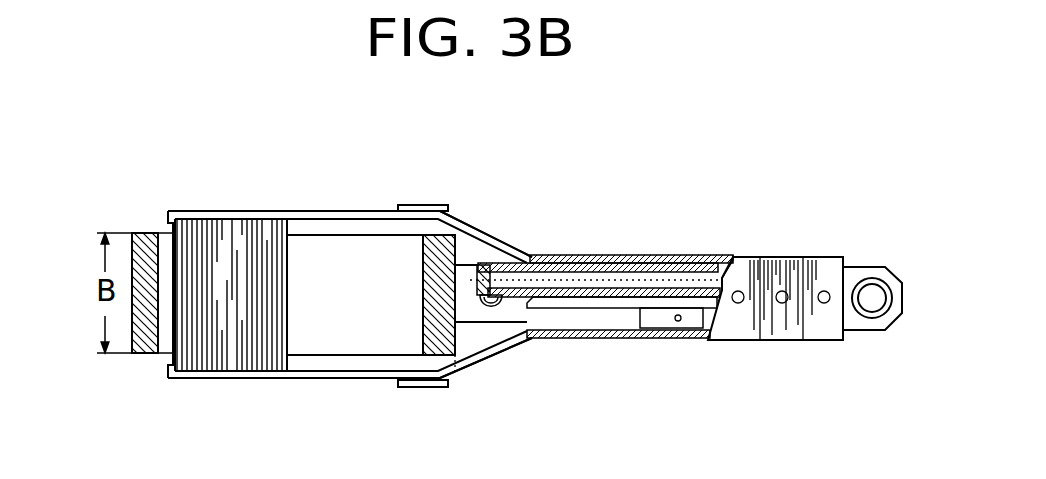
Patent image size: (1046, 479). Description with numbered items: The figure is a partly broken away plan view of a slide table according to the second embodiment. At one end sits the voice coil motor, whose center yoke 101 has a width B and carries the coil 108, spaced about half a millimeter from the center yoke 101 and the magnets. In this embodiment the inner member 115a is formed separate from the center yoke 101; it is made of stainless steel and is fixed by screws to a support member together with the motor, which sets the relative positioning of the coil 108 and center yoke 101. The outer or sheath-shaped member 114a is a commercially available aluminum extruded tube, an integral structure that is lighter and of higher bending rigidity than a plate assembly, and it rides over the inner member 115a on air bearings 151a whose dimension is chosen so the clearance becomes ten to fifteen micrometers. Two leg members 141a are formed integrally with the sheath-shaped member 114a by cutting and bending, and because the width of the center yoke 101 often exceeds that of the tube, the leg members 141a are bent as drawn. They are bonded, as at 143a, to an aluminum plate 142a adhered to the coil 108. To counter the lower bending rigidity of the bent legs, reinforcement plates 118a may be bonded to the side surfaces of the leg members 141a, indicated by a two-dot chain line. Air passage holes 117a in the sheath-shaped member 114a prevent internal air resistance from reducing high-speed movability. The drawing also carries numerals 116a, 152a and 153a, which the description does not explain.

The center yoke 101 is at (159, 233).
The coil 108 is at (263, 222).
The sheath-shaped member 114a is at (618, 225).
The inner member 115a is at (515, 312).
The retaining clip 116a is at (498, 307).
The air passage holes 117a is at (738, 303).
The reinforcement plates 118a is at (473, 343).
The leg members 141a is at (413, 205).
The aluminum plate 142a is at (333, 211).
The bond 143a is at (432, 208).
The air bearings 151a is at (692, 318).
The rod 152a is at (676, 262).
The bar 153a is at (643, 313).